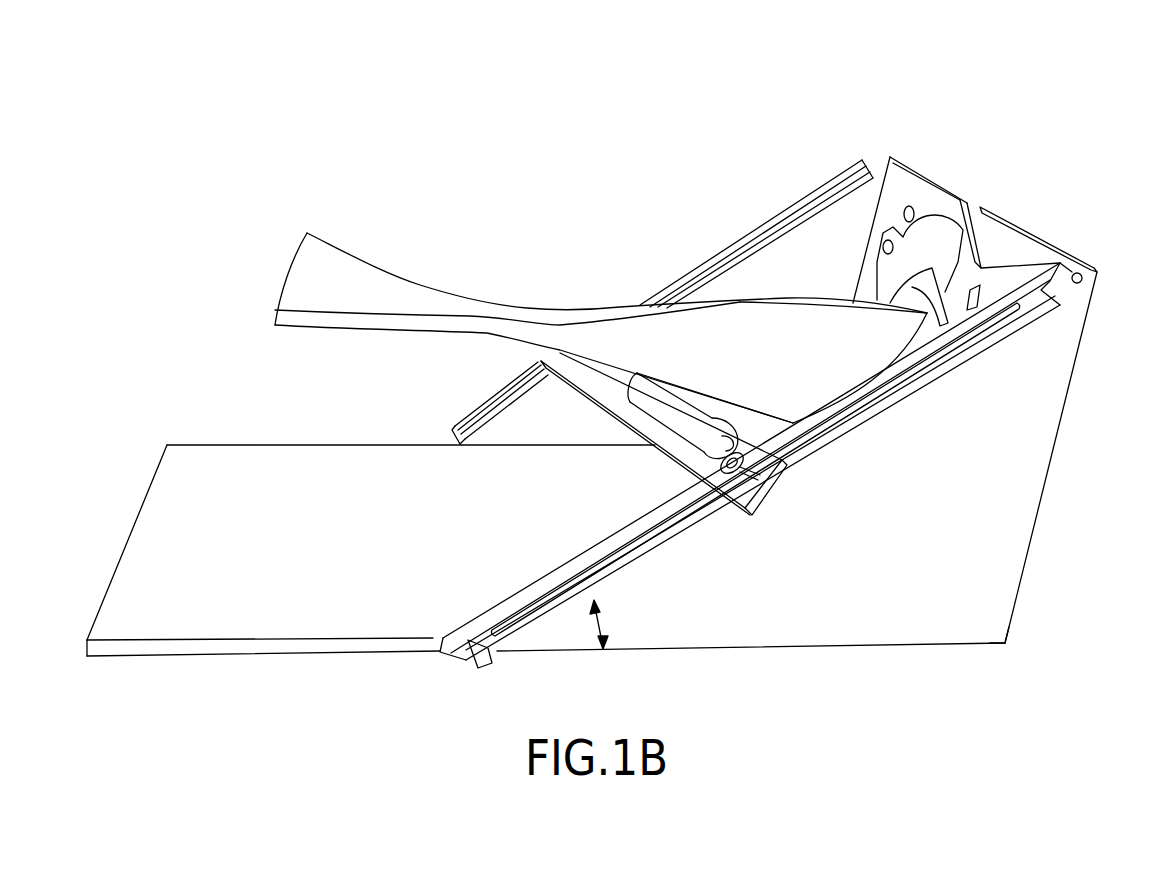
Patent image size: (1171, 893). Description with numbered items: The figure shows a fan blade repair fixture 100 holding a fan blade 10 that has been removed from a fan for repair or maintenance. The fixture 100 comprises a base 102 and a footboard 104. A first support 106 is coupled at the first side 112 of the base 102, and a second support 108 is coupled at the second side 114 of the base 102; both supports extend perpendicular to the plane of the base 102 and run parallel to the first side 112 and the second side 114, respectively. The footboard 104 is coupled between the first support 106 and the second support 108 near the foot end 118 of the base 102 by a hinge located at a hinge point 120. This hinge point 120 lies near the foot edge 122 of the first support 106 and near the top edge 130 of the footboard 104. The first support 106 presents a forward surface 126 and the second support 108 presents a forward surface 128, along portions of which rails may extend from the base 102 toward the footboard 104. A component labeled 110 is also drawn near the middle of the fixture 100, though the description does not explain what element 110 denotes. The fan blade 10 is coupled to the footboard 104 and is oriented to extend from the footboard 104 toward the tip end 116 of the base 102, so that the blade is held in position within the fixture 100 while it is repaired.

The fixture 100 is at (948, 102).
The fan blade 10 is at (378, 258).
The base 102 is at (299, 552).
The footboard 104 is at (1042, 251).
The first support 106 is at (927, 510).
The second support 108 is at (786, 211).
The roller bracket 110 is at (627, 410).
The first side 112 is at (313, 651).
The second side 114 is at (308, 444).
The tip end 116 is at (133, 530).
The foot end 118 is at (1012, 625).
The hinge point 120 is at (1084, 280).
The foot edge 122 is at (1048, 480).
The forward surface 126 is at (490, 651).
The forward surface 128 is at (500, 398).
The top edge 130 is at (947, 184).